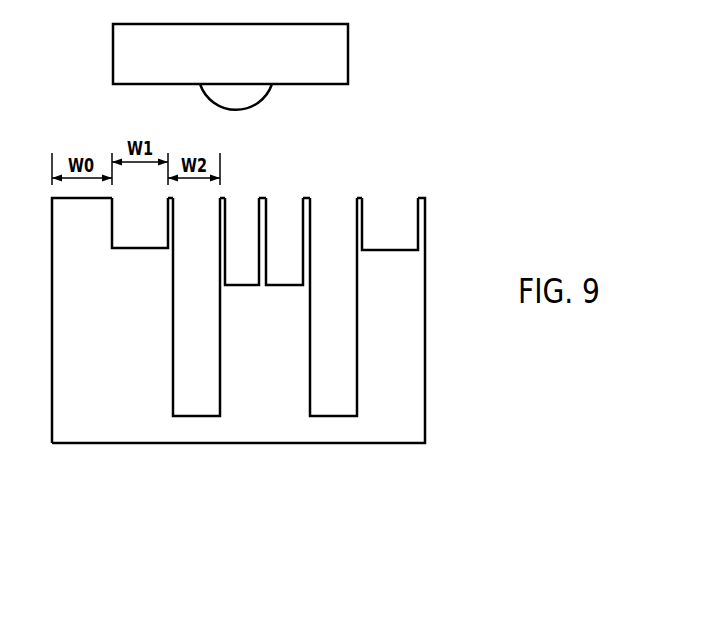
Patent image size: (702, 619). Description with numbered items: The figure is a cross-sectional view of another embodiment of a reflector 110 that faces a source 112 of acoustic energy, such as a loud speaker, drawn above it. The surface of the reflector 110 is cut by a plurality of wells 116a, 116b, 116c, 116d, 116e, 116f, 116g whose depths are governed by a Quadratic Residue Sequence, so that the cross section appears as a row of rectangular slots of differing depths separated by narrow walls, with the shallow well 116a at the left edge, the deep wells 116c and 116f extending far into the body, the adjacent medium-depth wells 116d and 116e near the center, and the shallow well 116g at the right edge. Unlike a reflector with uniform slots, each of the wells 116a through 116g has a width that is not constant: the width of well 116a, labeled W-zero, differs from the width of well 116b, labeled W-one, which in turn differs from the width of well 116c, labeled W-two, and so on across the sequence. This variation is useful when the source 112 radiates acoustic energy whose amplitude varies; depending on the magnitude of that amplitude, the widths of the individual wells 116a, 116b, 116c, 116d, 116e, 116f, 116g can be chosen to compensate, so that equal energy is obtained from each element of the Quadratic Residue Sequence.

The reflector 110 is at (238, 300).
The source of acoustic energy 112 is at (345, 52).
The well 116a is at (82, 202).
The well 116b is at (132, 247).
The well 116c is at (198, 416).
The well 116d is at (235, 285).
The well 116e is at (288, 285).
The well 116f is at (337, 416).
The well 116g is at (385, 250).